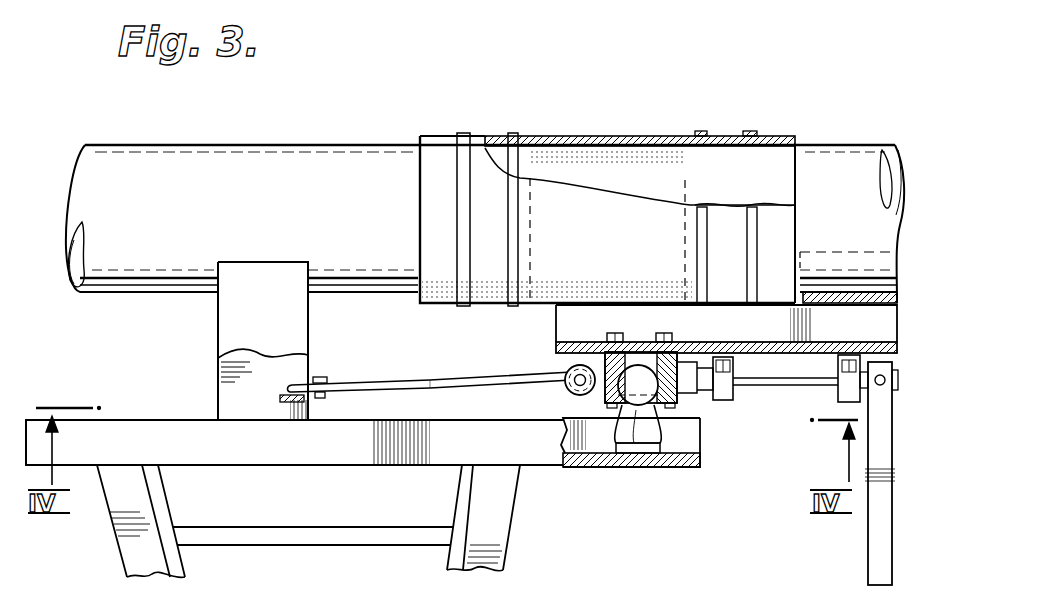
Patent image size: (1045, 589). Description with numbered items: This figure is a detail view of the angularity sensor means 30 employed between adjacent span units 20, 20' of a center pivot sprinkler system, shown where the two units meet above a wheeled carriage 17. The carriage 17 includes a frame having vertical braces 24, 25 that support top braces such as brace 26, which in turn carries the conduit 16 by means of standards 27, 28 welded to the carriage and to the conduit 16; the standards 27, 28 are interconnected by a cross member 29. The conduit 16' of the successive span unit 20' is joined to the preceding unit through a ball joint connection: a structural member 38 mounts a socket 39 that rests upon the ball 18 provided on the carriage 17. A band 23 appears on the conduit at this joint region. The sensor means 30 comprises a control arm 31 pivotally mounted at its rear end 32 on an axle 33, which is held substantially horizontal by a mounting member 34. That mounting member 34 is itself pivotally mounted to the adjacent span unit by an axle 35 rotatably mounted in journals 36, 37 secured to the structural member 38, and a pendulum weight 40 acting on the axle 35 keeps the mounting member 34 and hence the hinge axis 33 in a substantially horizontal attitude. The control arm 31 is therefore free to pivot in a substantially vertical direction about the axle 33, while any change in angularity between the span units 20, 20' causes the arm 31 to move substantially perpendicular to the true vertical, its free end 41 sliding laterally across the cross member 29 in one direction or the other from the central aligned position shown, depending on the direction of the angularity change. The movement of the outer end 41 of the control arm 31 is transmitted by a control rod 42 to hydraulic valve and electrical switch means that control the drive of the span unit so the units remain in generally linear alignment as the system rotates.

The conduit 16 is at (243, 193).
The conduit 16' is at (662, 195).
The wheeled carriage 17 is at (503, 530).
The ball 18 is at (640, 430).
The span unit 20 is at (247, 91).
The span unit 20' is at (845, 81).
The sleeve strip 23 is at (642, 140).
The vertical brace 24 is at (140, 550).
The vertical brace 25 is at (478, 503).
The top brace 26 is at (112, 432).
The standard 27 is at (272, 282).
The standard 28 is at (240, 386).
The cross member 29 is at (290, 400).
The angularity sensor means 30 is at (462, 362).
The control arm 31 is at (380, 378).
The rear end 32 is at (475, 385).
The axle 33 is at (575, 388).
The mounting member 34 is at (572, 367).
The axle 35 is at (757, 378).
The journal 36 is at (727, 403).
The journal 37 is at (838, 390).
The structural member 38 is at (640, 352).
The socket 39 is at (615, 357).
The pendulum weight 40 is at (868, 528).
The free end 41 is at (292, 352).
The control rod 42 is at (320, 394).